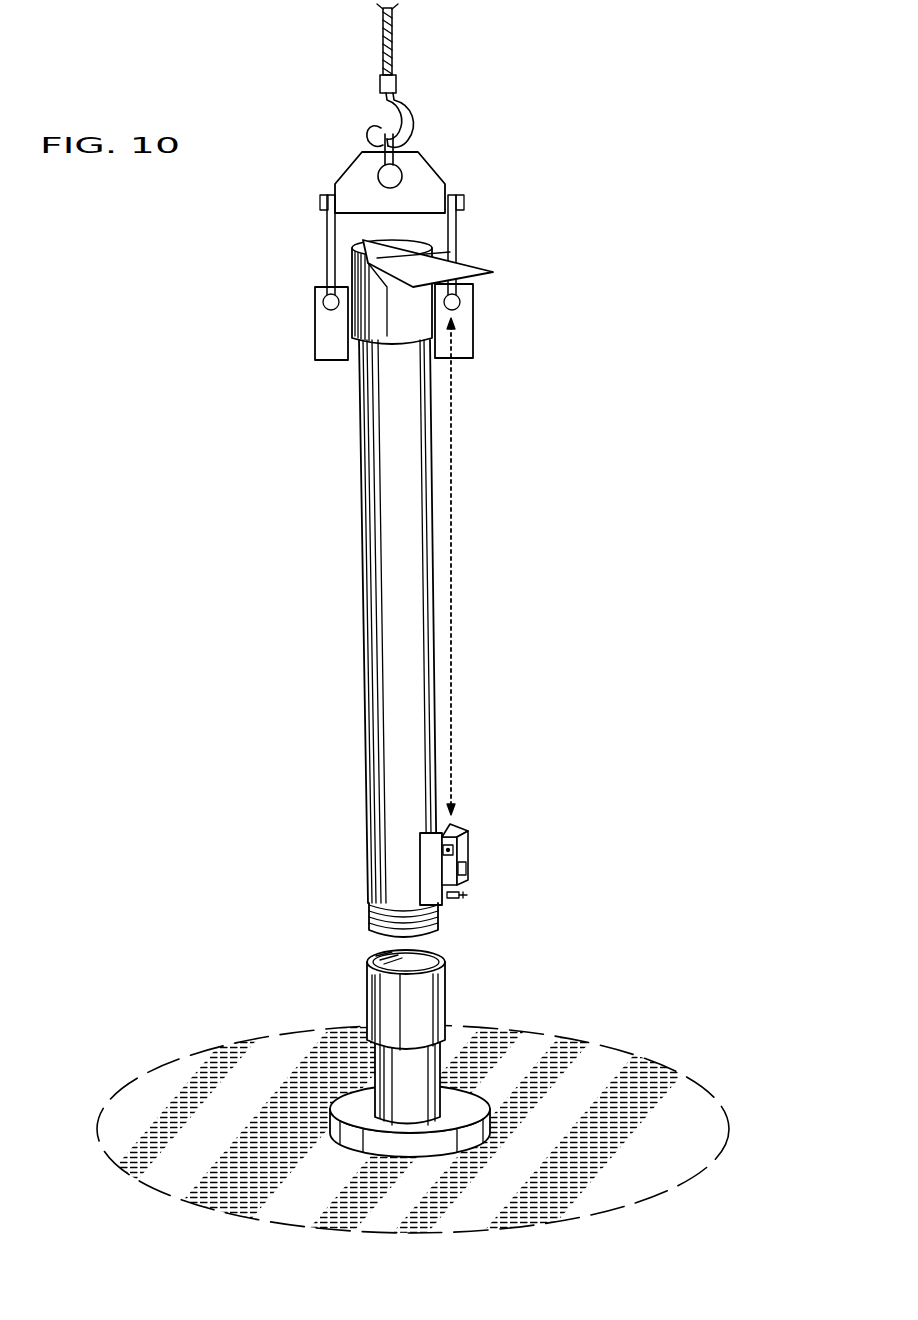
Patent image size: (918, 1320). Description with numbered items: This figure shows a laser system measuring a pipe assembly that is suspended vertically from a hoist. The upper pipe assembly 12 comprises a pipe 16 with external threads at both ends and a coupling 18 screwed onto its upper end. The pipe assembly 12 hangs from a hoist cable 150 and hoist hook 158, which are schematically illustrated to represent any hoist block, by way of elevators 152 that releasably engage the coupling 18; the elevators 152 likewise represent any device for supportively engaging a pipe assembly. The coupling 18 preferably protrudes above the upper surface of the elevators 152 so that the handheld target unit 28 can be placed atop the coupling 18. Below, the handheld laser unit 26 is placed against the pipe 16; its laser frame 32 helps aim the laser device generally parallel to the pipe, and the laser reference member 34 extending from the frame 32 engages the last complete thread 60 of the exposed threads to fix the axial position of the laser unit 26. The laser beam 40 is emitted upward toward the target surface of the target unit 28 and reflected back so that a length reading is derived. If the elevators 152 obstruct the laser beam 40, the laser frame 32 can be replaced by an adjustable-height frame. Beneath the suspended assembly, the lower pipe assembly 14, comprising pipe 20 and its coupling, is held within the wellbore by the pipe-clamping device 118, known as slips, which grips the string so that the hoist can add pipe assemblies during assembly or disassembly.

The hoist cable 150 is at (392, 53).
The hoist hook 158 is at (412, 115).
The handheld target unit 28 is at (482, 257).
The elevators 152 is at (312, 327).
The coupling 18 is at (398, 340).
The laser beam 40 is at (447, 458).
The pipe assembly 12 is at (362, 548).
The pipe 16 is at (362, 732).
The handheld laser unit 26 is at (485, 840).
The handheld laser frame 32 is at (420, 852).
The last complete thread 60 is at (402, 902).
The laser reference member 34 is at (462, 900).
The pipe assembly 14 is at (370, 992).
The pipe 20 is at (440, 1010).
The pipe-clamping device 118 is at (467, 1133).